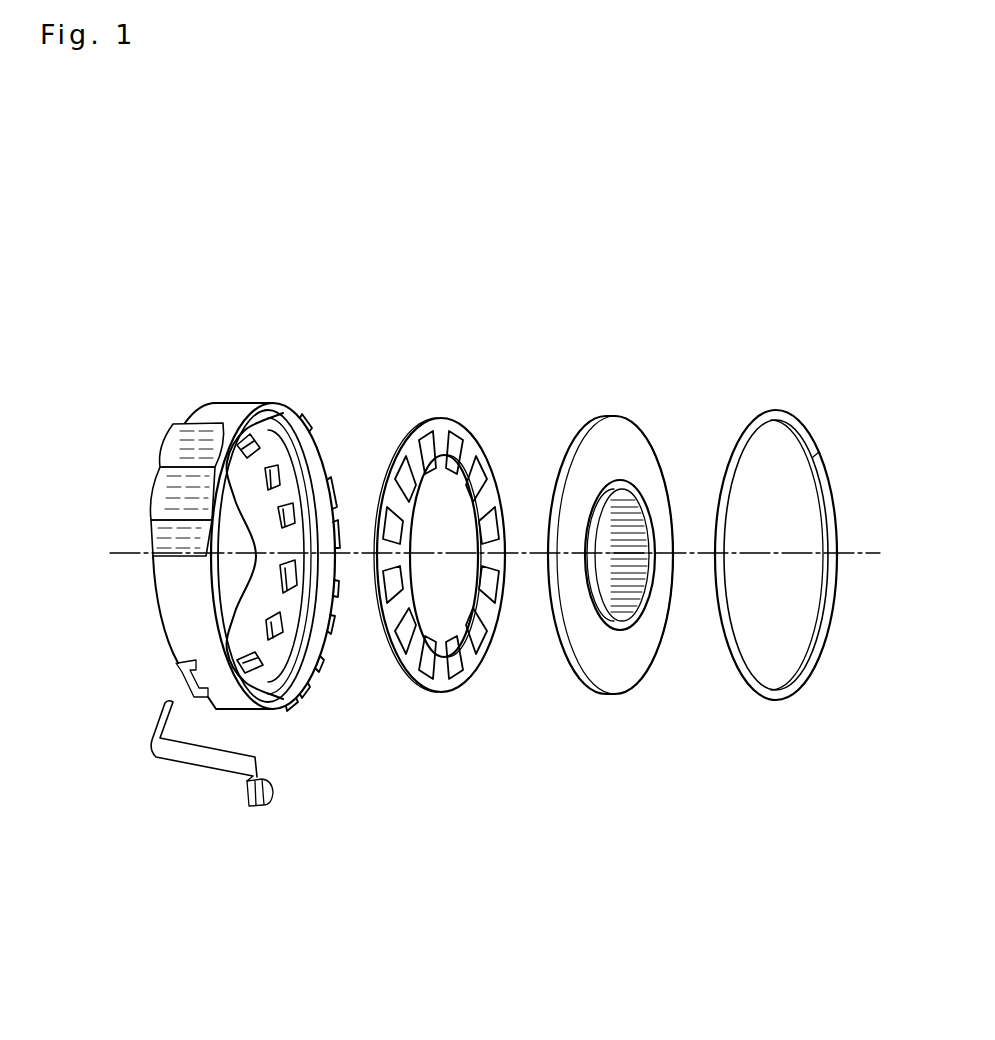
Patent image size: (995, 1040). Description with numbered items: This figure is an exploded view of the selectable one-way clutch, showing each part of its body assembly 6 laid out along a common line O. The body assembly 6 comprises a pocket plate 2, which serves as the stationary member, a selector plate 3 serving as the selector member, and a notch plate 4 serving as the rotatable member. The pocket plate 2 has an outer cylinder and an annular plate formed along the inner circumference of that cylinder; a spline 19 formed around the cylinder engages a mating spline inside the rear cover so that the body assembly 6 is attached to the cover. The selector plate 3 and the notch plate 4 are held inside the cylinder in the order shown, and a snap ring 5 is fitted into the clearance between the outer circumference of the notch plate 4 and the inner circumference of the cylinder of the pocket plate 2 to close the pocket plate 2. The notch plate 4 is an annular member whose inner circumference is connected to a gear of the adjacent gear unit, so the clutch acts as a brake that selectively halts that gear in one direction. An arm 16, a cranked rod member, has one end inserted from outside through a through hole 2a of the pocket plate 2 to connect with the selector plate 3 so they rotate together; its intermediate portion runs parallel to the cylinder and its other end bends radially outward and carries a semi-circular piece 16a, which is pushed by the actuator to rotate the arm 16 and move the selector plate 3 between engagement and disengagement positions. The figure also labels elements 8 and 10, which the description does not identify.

The pocket plate 2 is at (241, 578).
The through hole 2a is at (192, 680).
The selector plate 3 is at (453, 576).
The notch plate 4 is at (618, 693).
The snap ring 5 is at (776, 701).
The body assembly 6 is at (807, 755).
The pawls 8 is at (290, 510).
The pockets of cage 10 is at (478, 462).
The arm 16 is at (231, 784).
The semi-circular piece 16a is at (268, 798).
The spline 19 is at (180, 428).
The axis O is at (99, 554).